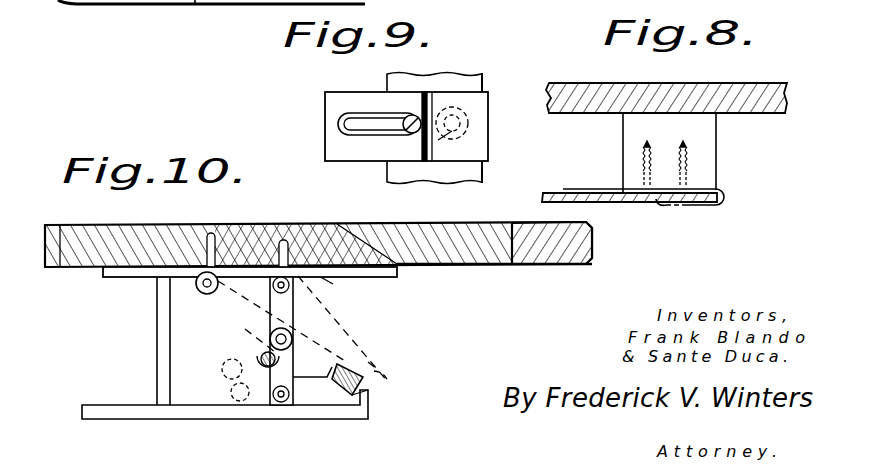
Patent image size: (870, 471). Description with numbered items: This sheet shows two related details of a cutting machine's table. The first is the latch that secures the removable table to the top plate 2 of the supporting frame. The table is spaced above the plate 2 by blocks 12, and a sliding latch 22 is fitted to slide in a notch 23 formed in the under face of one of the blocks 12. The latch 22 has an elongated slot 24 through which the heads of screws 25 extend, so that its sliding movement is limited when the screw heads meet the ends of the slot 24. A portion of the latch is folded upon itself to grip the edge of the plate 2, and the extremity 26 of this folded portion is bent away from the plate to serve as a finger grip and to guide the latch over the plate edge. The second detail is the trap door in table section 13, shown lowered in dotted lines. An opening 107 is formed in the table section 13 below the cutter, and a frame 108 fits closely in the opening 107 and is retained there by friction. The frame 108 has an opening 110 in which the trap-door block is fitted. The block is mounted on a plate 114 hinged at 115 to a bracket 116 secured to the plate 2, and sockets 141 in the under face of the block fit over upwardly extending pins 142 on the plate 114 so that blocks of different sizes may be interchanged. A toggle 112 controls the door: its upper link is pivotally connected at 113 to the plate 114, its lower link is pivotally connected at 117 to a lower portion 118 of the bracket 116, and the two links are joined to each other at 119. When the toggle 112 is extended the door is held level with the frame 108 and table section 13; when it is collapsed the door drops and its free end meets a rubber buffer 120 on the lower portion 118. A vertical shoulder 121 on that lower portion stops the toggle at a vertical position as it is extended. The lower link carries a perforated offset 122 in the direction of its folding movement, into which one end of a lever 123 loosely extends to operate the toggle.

In FIG. 8, the plate 2 is at (630, 203).
In FIG. 8, the blocks 12 is at (698, 133).
In FIG. 10, the table section 13 is at (552, 265).
In FIG. 9, the sliding latch 22 is at (466, 103).
In FIG. 8, the sliding latch 22 is at (717, 205).
In FIG. 9, the notch 23 is at (463, 91).
In FIG. 9, the elongated slot 24 is at (346, 123).
In FIG. 9, the screw 25 is at (413, 127).
In FIG. 8, the screw 25 is at (653, 167).
In FIG. 8, the extremity 26 is at (663, 217).
In FIG. 10, the opening 107 is at (497, 265).
In FIG. 10, the frame 108 is at (132, 229).
In FIG. 10, the opening 110 is at (210, 232).
In FIG. 10, the toggle 112 is at (367, 245).
In FIG. 10, the pivotal connection 113 is at (292, 295).
In FIG. 10, the plate 114 is at (387, 273).
In FIG. 10, the hinge 115 is at (200, 289).
In FIG. 10, the bracket 116 is at (158, 293).
In FIG. 10, the pivotal connection 117 is at (281, 398).
In FIG. 10, the lower portion 118 is at (217, 412).
In FIG. 10, the pivotal connection 119 is at (292, 340).
In FIG. 10, the buffer 120 is at (352, 395).
In FIG. 10, the vertical shoulder 121 is at (295, 388).
In FIG. 10, the offset 122 is at (261, 357).
In FIG. 10, the lever 123 is at (263, 367).
In FIG. 10, the socket 141 is at (338, 250).
In FIG. 10, the pin 142 is at (334, 282).